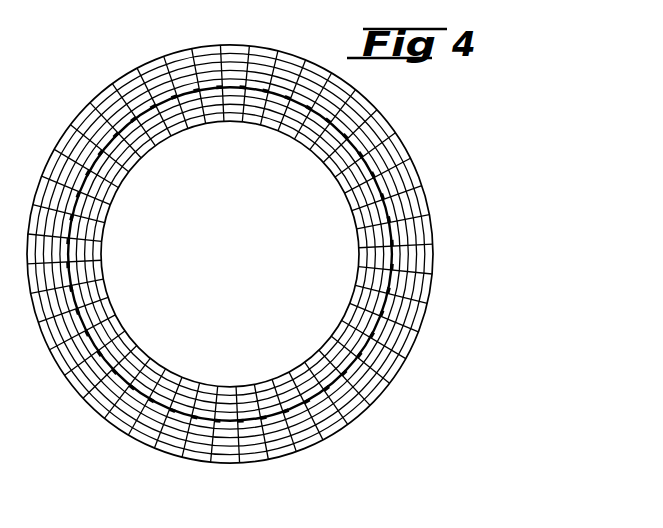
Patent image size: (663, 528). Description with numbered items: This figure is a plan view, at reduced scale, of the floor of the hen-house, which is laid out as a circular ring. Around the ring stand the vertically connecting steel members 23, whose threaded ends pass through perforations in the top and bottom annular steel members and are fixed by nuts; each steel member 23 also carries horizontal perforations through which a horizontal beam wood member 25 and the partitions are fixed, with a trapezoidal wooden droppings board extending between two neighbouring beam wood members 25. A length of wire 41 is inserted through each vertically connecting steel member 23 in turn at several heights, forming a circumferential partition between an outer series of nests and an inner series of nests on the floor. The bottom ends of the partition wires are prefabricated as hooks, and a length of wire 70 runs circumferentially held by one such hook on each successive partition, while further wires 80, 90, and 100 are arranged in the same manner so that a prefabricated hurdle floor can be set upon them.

The vertically connecting steel member 23 is at (393, 247).
The horizontal beam wood member 25 is at (422, 268).
The wire 41 is at (397, 278).
The wire 70 is at (73, 393).
The wire 80 is at (138, 432).
The wire 90 is at (308, 385).
The wire 100 is at (250, 388).